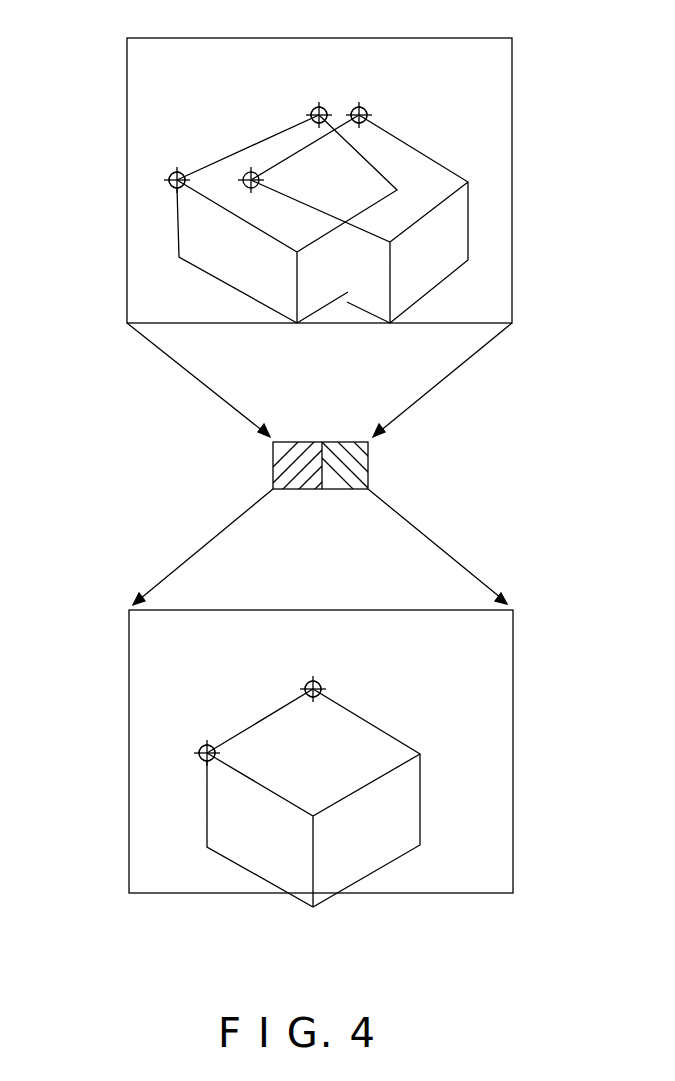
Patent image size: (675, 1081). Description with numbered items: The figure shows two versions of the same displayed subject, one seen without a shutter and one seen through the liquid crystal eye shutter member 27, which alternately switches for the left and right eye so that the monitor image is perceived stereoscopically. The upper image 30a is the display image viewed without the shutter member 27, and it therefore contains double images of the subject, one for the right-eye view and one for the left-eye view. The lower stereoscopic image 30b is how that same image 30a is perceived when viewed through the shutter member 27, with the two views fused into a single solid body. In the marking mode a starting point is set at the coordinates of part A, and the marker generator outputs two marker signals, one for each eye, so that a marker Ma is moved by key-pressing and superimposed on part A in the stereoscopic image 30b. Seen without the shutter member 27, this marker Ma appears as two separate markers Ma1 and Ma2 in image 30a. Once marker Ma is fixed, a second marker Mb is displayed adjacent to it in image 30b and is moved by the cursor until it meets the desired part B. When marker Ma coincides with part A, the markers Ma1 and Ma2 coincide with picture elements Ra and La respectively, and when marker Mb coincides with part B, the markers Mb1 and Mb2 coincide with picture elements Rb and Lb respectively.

The image 30a is at (512, 218).
The stereoscopic image 30b is at (513, 751).
The eye shutter member 27 is at (370, 466).
The picture element Ra is at (175, 162).
The picture element Rb is at (323, 99).
The picture element La is at (359, 219).
The picture element Lb is at (362, 99).
The marker Ma1 is at (169, 184).
The marker Ma2 is at (248, 189).
The marker Mb1 is at (333, 104).
The marker Mb2 is at (377, 107).
The part A is at (207, 745).
The part B is at (306, 686).
The marker Ma is at (199, 763).
The marker Mb is at (324, 688).